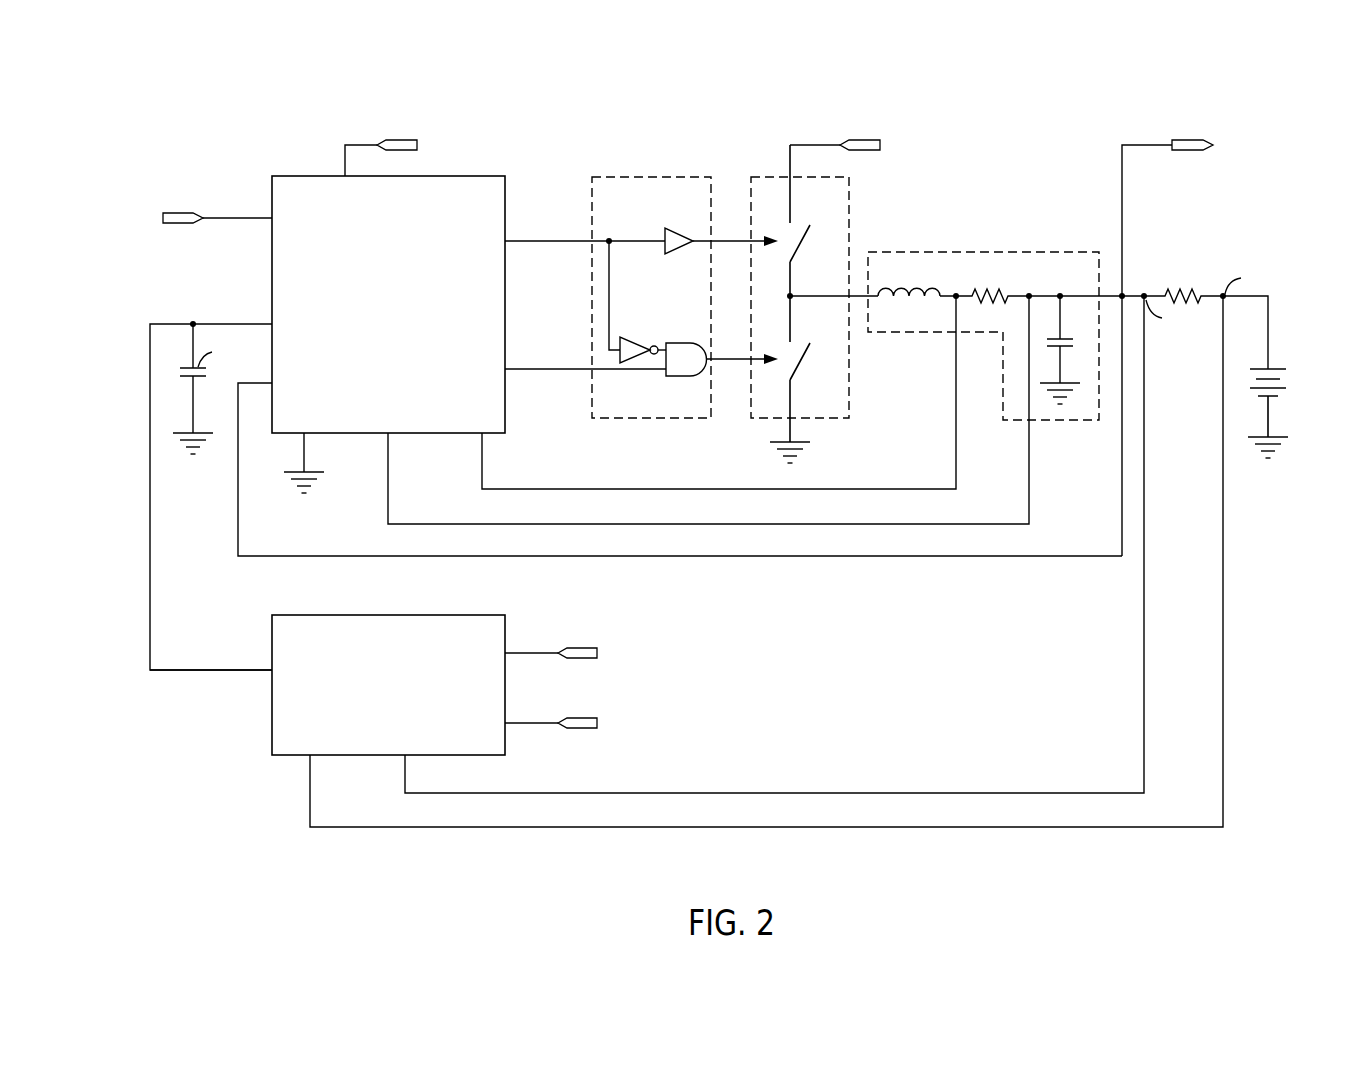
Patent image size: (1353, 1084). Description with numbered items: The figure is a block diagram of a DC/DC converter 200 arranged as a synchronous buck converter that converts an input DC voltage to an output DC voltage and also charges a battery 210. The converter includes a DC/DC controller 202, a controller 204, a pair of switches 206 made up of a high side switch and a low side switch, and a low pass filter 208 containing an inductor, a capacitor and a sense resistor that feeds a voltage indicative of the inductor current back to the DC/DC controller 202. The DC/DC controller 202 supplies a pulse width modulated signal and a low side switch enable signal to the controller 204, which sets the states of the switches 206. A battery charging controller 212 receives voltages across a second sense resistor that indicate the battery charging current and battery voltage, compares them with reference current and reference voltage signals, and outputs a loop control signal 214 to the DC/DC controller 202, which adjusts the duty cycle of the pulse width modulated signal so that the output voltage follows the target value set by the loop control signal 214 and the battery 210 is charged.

The DC/DC converter 200 is at (215, 146).
The DC/DC controller 202 is at (477, 176).
The controller 204 is at (651, 177).
The pair of switches 206 is at (849, 228).
The low pass filter 208 is at (1025, 252).
The battery 210 is at (1270, 368).
The battery charging controller 212 is at (412, 615).
The loop control signal 214 is at (168, 670).